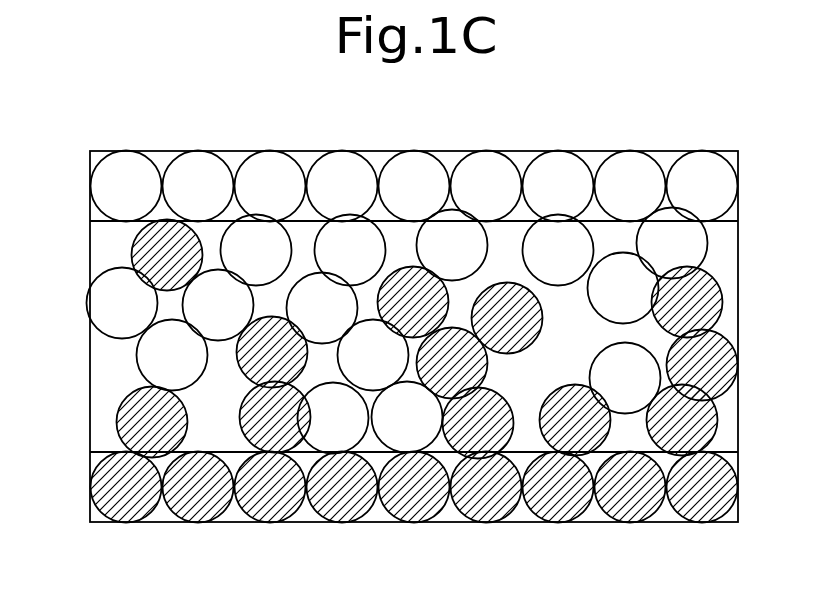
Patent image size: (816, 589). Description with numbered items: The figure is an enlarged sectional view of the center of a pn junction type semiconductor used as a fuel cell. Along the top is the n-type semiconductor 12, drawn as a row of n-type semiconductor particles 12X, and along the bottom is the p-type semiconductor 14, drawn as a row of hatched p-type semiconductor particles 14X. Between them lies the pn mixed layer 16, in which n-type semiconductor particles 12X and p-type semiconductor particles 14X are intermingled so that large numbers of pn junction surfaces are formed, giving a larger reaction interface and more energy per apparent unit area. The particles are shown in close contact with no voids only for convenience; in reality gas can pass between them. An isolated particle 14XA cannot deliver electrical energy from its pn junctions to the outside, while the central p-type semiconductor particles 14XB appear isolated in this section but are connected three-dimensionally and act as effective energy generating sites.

The n-type semiconductor 12 is at (388, 163).
The n-type semiconductor particles 12X is at (202, 163).
The p-type semiconductor 14 is at (388, 512).
The p-type semiconductor particles 14X is at (205, 513).
The isolated particle 14XA is at (192, 242).
The p-type semiconductor particles at the center 14XB is at (425, 268).
The pn mixed layer 16 is at (382, 282).